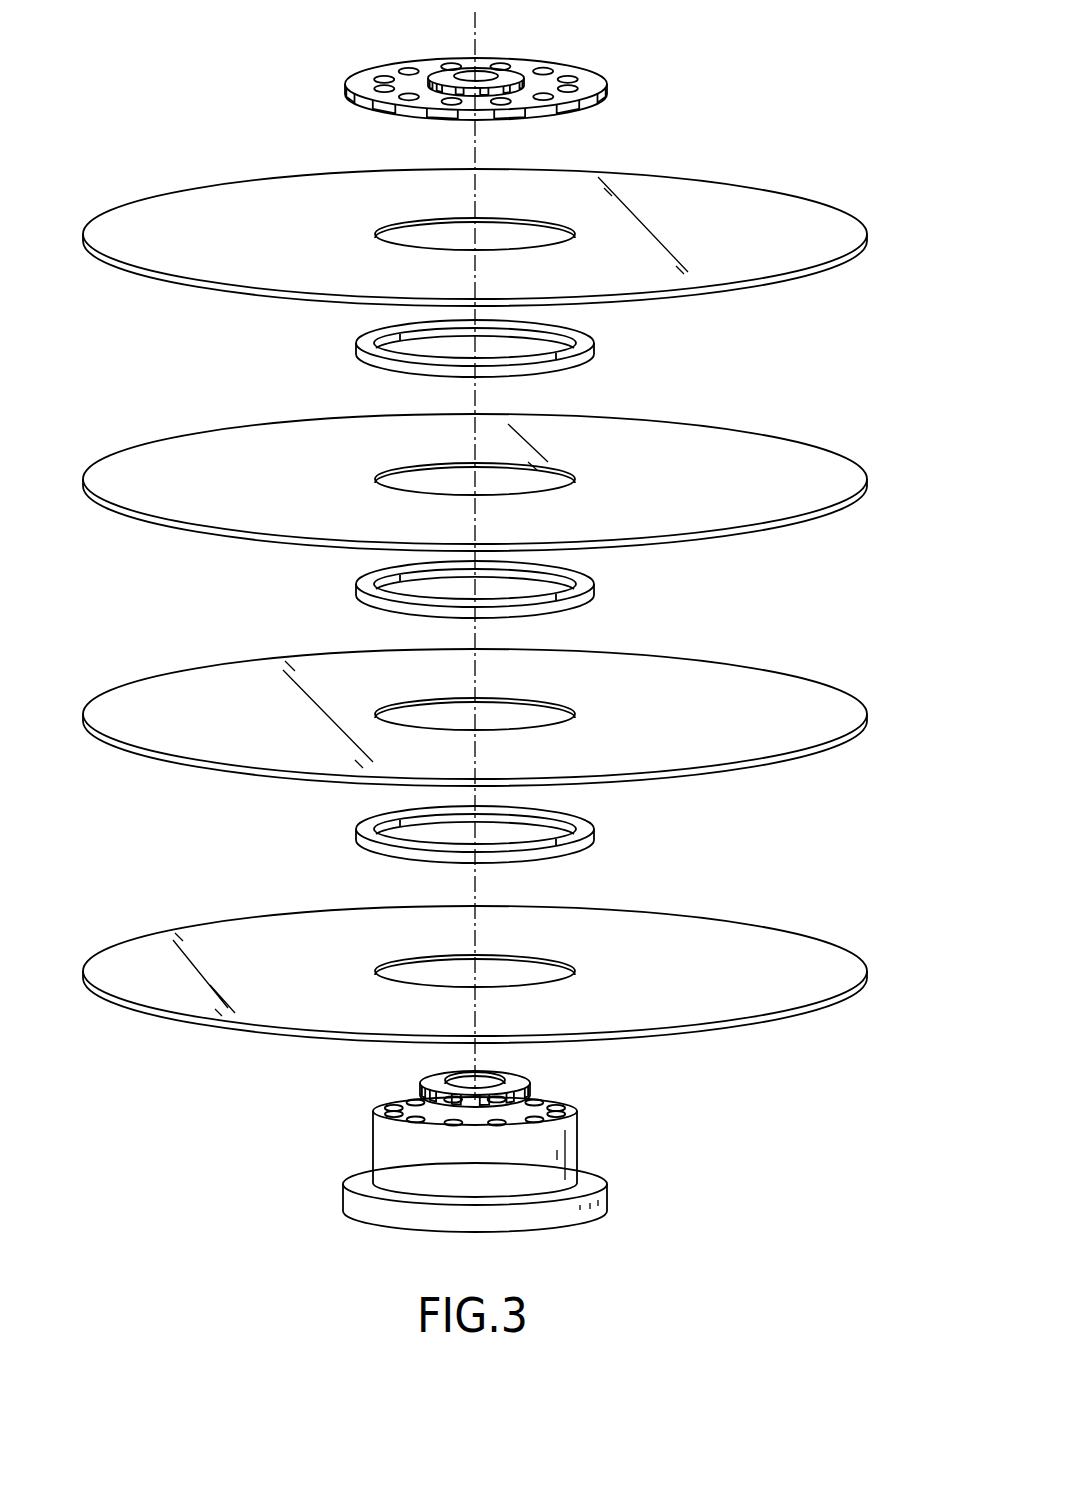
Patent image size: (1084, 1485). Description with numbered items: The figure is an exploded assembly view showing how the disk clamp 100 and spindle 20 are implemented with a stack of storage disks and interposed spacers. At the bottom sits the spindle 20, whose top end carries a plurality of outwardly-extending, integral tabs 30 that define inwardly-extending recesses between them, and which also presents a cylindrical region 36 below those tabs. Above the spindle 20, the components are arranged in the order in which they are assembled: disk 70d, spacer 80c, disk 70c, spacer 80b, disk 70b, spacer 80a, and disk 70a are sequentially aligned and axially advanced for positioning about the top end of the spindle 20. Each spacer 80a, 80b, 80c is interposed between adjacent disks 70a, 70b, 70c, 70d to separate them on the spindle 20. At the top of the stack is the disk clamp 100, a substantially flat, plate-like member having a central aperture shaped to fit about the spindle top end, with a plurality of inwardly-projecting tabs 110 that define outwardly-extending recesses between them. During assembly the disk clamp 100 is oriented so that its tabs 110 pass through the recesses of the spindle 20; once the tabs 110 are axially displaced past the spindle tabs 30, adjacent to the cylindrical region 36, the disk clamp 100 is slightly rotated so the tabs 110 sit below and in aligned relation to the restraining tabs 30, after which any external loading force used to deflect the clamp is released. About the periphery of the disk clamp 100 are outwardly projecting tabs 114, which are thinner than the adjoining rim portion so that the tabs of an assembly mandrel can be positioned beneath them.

The spindle 20 is at (524, 1144).
The outwardly-extending integral tabs 30 is at (428, 1103).
The cylindrical region 36 is at (520, 1100).
The disk 70a is at (240, 200).
The disk 70b is at (175, 458).
The disk 70c is at (167, 685).
The disk 70d is at (213, 928).
The spacer 80a is at (593, 350).
The spacer 80b is at (593, 590).
The spacer 80c is at (593, 835).
The disk clamp 100 is at (531, 77).
The inwardly-projecting tabs 110 is at (456, 72).
The outwardly projecting tabs 114 is at (527, 109).